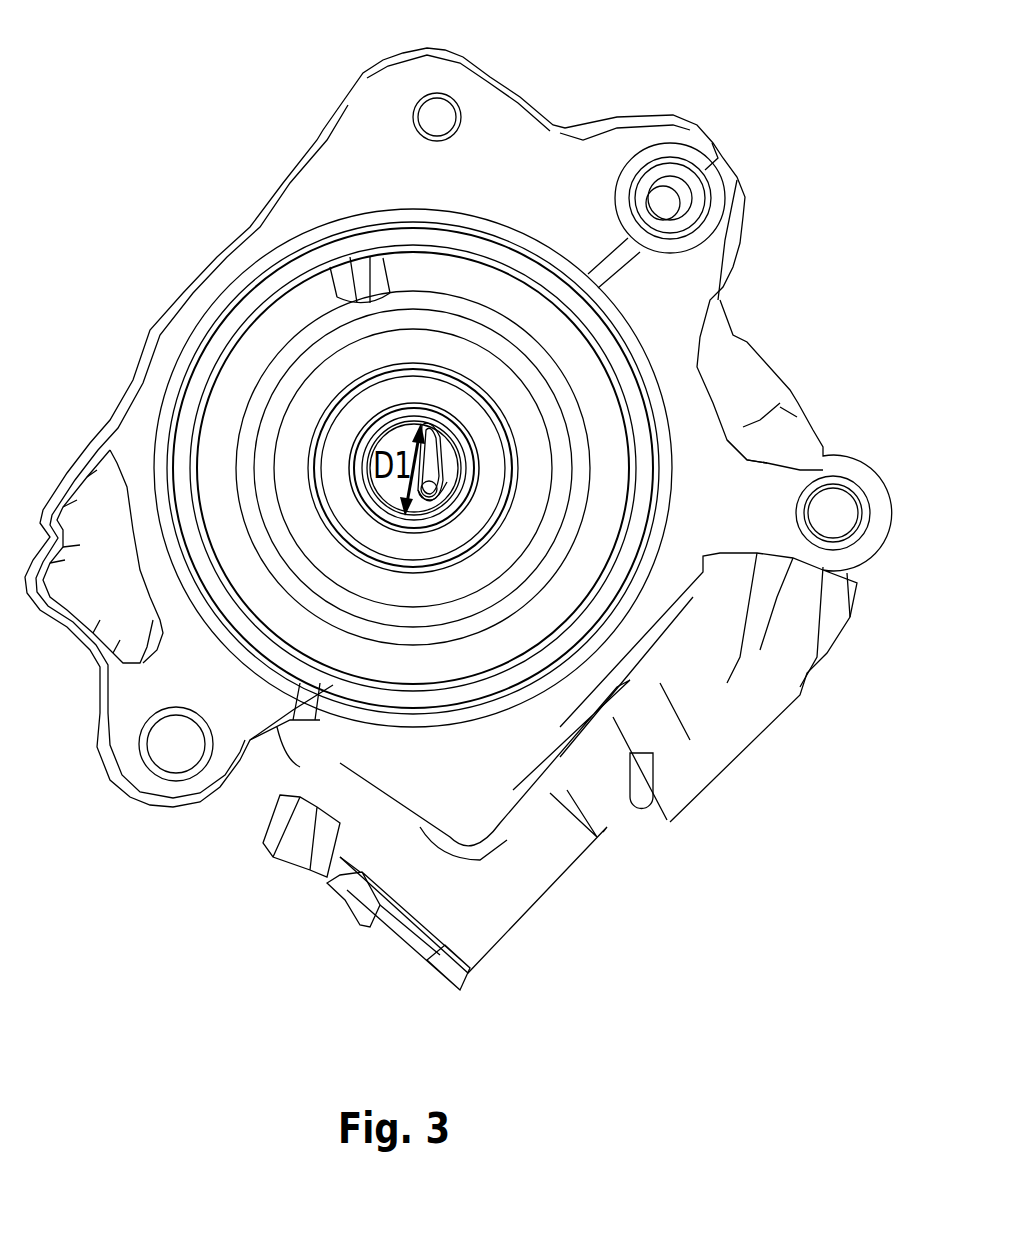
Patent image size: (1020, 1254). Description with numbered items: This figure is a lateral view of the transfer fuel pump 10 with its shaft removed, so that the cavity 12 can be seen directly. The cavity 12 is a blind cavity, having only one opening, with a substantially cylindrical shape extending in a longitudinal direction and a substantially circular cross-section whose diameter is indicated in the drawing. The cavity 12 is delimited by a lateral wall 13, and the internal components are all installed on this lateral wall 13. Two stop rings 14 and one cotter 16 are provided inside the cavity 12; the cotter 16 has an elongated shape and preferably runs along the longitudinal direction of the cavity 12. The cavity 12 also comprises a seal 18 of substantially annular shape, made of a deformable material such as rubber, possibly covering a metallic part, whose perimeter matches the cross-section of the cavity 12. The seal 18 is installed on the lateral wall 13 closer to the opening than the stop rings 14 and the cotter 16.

The transfer fuel pump 10 is at (146, 98).
The cavity 12 is at (388, 439).
The lateral wall 13 is at (398, 510).
The stop ring 14 is at (430, 440).
The cotter 16 is at (435, 488).
The seal 18 is at (440, 507).